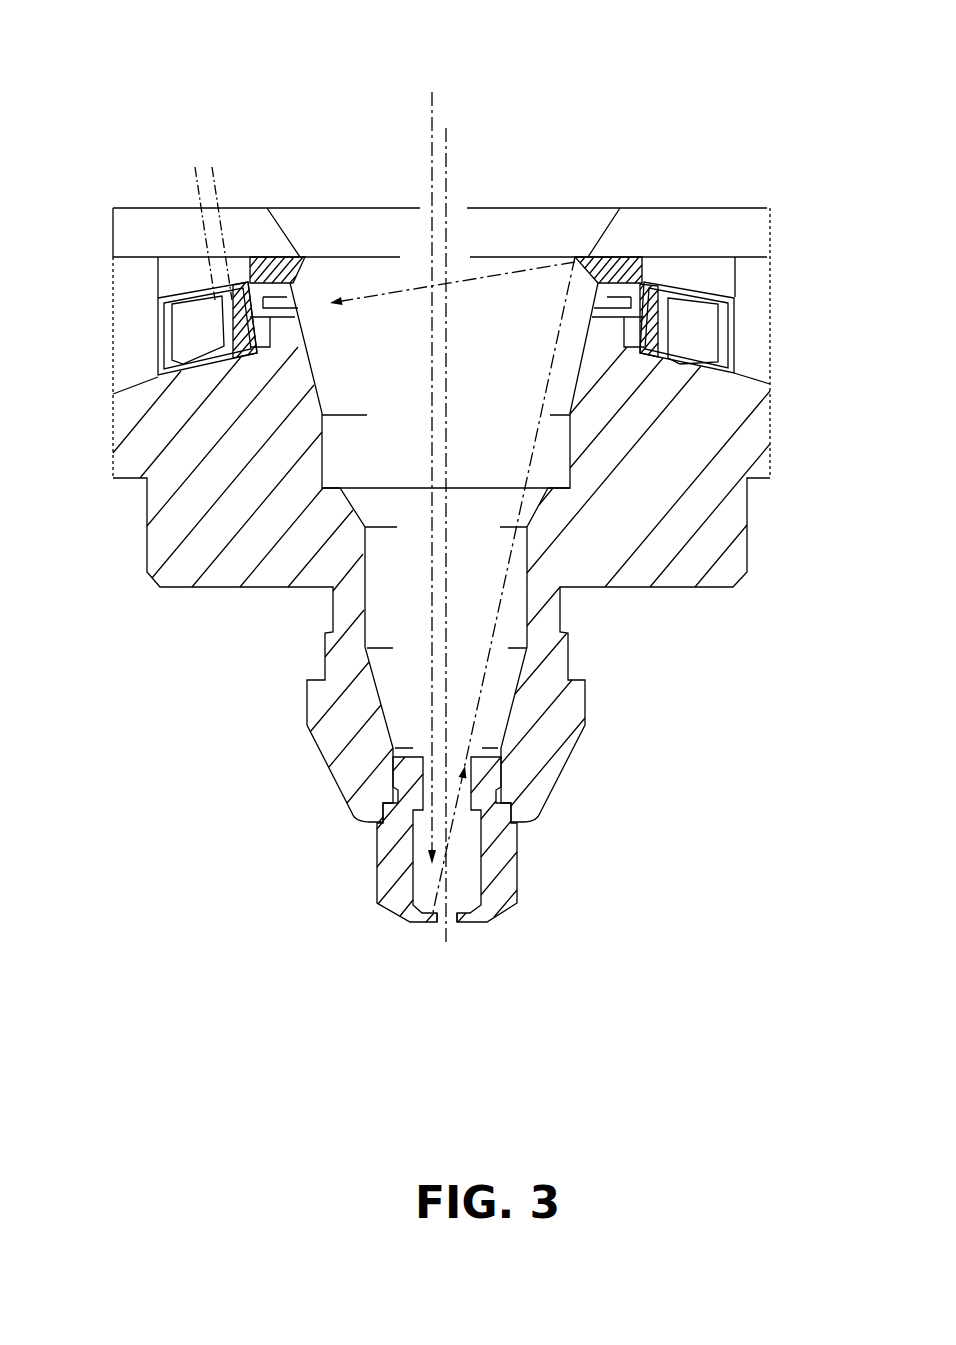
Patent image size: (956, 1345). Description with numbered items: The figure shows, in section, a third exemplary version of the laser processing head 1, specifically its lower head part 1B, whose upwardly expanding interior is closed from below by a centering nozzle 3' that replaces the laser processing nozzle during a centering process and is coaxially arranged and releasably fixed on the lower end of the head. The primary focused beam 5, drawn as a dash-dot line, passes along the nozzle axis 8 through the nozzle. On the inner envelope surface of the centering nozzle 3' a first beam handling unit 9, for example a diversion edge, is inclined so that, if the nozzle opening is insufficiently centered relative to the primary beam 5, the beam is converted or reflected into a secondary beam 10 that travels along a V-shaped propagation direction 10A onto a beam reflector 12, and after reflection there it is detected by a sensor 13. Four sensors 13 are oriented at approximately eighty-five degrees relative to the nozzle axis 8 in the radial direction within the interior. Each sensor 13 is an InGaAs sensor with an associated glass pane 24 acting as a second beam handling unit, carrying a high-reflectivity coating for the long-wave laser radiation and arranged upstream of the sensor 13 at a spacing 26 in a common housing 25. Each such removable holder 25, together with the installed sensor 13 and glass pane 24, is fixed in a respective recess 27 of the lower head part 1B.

The laser processing head 1 is at (302, 125).
The lower head part 1B is at (690, 553).
The centering nozzle 3' is at (494, 853).
The primary focused beam 5 is at (430, 140).
The nozzle axis 8 is at (452, 158).
The first beam handling unit 9 is at (413, 922).
The secondary electromagnetic beam 10 is at (510, 560).
The propagation direction 10A is at (483, 688).
The beam reflector 12 is at (577, 260).
The sensor 13 is at (695, 328).
The glass pane 24 is at (653, 350).
The housing 25 is at (730, 363).
The spacing 26 is at (187, 168).
The recess 27 is at (712, 298).